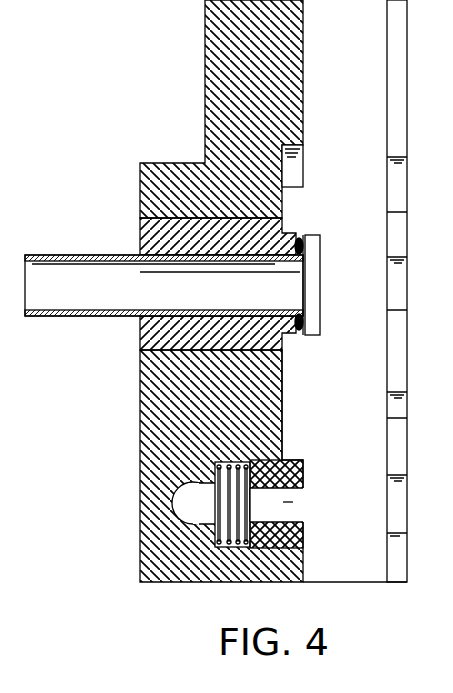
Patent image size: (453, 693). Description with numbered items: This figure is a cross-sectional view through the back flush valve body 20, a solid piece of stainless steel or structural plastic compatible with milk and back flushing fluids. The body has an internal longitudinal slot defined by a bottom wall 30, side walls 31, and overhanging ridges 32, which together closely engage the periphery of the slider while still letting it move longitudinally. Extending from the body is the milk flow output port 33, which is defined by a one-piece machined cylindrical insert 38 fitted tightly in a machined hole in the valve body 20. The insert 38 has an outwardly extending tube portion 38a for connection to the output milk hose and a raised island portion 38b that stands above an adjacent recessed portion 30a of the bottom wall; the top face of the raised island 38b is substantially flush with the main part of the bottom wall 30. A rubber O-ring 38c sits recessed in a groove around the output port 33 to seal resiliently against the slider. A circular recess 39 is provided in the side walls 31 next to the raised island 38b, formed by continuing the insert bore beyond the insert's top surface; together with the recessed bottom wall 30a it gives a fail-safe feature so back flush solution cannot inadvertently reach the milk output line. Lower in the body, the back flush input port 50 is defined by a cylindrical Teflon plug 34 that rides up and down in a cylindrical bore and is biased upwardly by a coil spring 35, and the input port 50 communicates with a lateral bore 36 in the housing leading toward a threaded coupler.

The back flush valve body 20 is at (140, 373).
The bottom wall 30 is at (304, 113).
The recessed portion of the bottom wall 30a is at (283, 406).
The side walls 31 is at (356, 58).
The overhanging ridges 32 is at (387, 25).
The milk flow output port 33 is at (128, 303).
The cylindrical Teflon plug 34 is at (297, 460).
The coil spring 35 is at (252, 505).
The lateral bore 36 is at (203, 514).
The cylindrical insert 38 is at (138, 233).
The tube portion 38a is at (63, 318).
The raised island portion 38b is at (298, 235).
The rubber O-ring 38c is at (306, 324).
The circular recess 39 is at (313, 273).
The back flush input port 50 is at (300, 512).